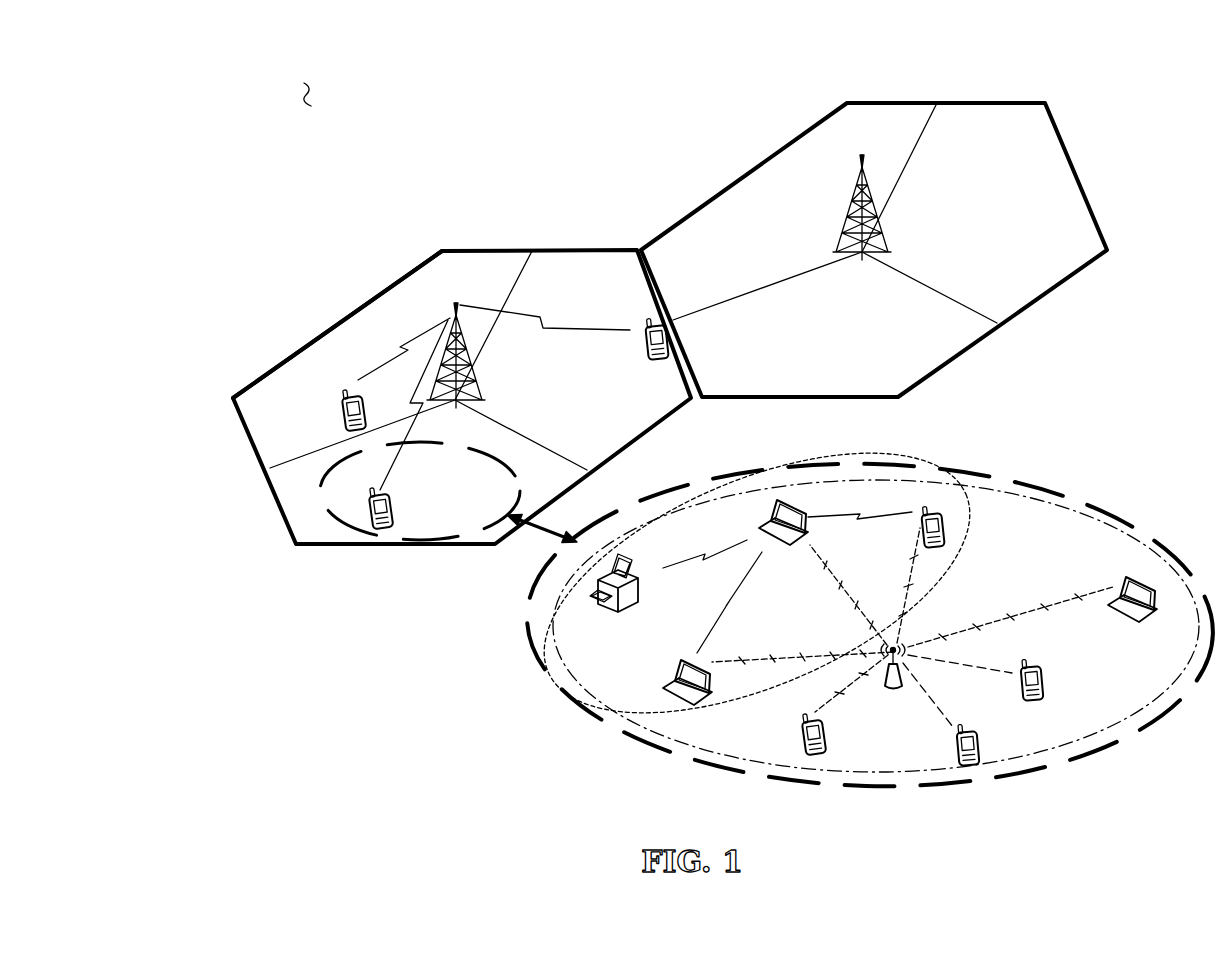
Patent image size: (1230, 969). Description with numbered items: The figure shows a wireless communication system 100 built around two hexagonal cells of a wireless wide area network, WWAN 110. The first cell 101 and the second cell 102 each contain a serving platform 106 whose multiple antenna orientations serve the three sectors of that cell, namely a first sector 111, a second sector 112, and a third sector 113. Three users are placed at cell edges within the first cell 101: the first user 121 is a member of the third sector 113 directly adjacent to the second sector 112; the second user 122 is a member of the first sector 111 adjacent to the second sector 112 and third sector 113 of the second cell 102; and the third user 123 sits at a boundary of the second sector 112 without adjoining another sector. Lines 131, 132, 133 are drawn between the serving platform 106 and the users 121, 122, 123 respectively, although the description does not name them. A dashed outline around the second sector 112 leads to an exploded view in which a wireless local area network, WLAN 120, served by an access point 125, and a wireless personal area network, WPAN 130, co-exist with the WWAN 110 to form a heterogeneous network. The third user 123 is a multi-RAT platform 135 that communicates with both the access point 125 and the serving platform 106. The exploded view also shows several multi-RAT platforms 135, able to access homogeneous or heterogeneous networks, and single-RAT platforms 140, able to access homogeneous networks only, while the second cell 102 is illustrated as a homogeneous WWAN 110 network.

The wireless communication system 100 is at (297, 84).
The first cell 101 is at (481, 248).
The second cell 102 is at (1043, 297).
The serving platform 106 is at (453, 298).
The WWAN 110 is at (342, 308).
The first sector 111 is at (566, 400).
The second sector 112 is at (398, 505).
The third sector 113 is at (337, 360).
The wireless local area network 120 is at (1108, 732).
The first user 121 is at (342, 405).
The second user 122 is at (643, 307).
The third user 123 is at (383, 530).
The access point 125 is at (886, 681).
The wireless personal area network 130 is at (548, 607).
The communication link 131 is at (415, 327).
The communication link 132 is at (580, 315).
The communication link 133 is at (387, 463).
The multi-RAT platform 135 is at (873, 606).
The single-RAT platform 140 is at (982, 710).